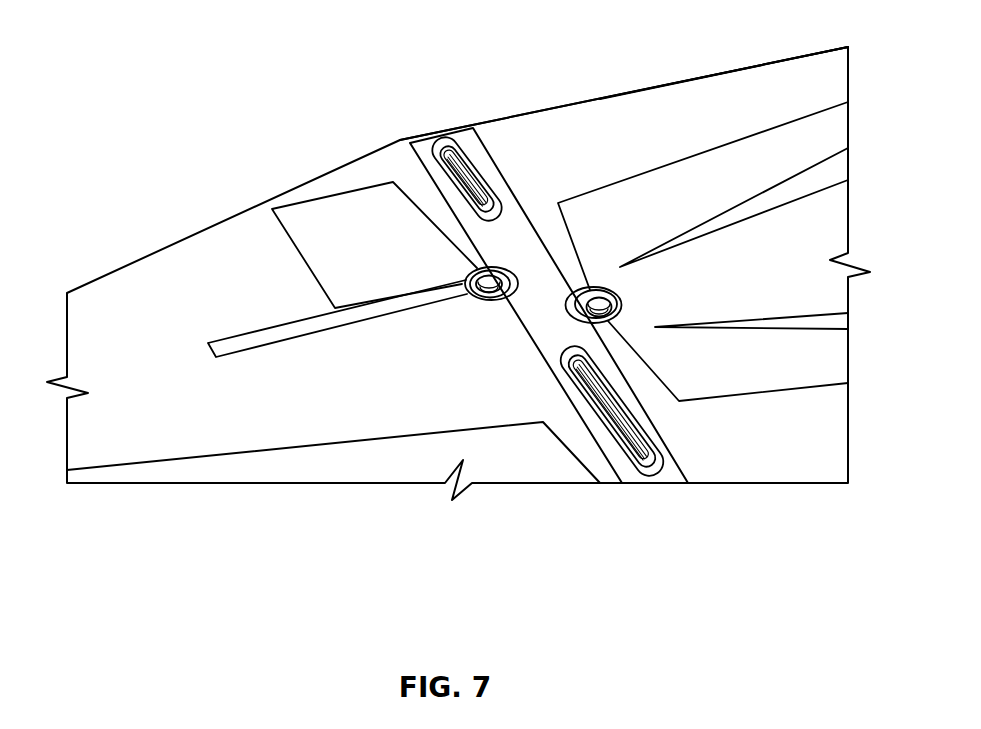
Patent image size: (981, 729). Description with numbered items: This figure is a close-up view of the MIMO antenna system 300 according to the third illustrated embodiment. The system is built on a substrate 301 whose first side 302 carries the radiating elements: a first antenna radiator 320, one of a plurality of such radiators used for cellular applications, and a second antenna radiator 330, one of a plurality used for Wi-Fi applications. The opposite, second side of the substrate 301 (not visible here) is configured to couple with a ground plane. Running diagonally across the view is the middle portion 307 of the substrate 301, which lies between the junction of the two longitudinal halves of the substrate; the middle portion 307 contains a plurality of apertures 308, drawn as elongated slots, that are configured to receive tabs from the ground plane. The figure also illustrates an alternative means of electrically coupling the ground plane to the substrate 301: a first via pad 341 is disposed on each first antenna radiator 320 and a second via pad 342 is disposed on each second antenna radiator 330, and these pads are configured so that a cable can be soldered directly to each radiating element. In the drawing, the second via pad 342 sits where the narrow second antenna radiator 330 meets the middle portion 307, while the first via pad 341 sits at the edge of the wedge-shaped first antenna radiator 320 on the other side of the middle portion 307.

The MIMO antenna system 300 is at (106, 47).
The substrate 301 is at (592, 118).
The first side 302 is at (683, 97).
The middle portion 307 is at (530, 247).
The apertures 308 is at (450, 143).
The first antenna radiator 320 is at (835, 138).
The second antenna radiator 330 is at (235, 335).
The first via pad 341 is at (618, 298).
The second via pad 342 is at (488, 302).